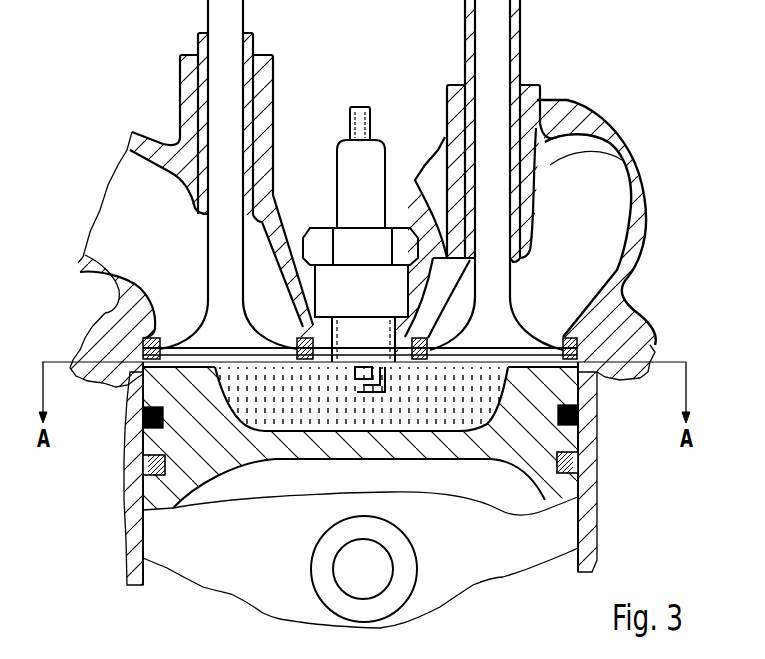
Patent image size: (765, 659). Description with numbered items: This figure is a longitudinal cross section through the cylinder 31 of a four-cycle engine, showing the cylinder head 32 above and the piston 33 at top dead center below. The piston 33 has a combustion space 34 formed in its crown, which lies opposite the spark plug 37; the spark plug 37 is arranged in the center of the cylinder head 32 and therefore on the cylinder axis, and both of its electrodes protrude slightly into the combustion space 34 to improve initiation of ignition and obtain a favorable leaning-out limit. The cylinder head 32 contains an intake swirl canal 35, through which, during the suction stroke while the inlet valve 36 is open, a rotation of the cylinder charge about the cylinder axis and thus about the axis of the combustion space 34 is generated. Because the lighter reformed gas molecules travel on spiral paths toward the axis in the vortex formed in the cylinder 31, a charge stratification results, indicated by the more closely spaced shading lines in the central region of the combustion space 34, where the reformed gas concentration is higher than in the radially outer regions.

The cylinder 31 is at (590, 500).
The cylinder head 32 is at (637, 335).
The piston 33 is at (535, 432).
The combustion space 34 is at (240, 402).
The intake swirl canal 35 is at (614, 200).
The inlet valve 36 is at (517, 337).
The spark plug 37 is at (343, 160).